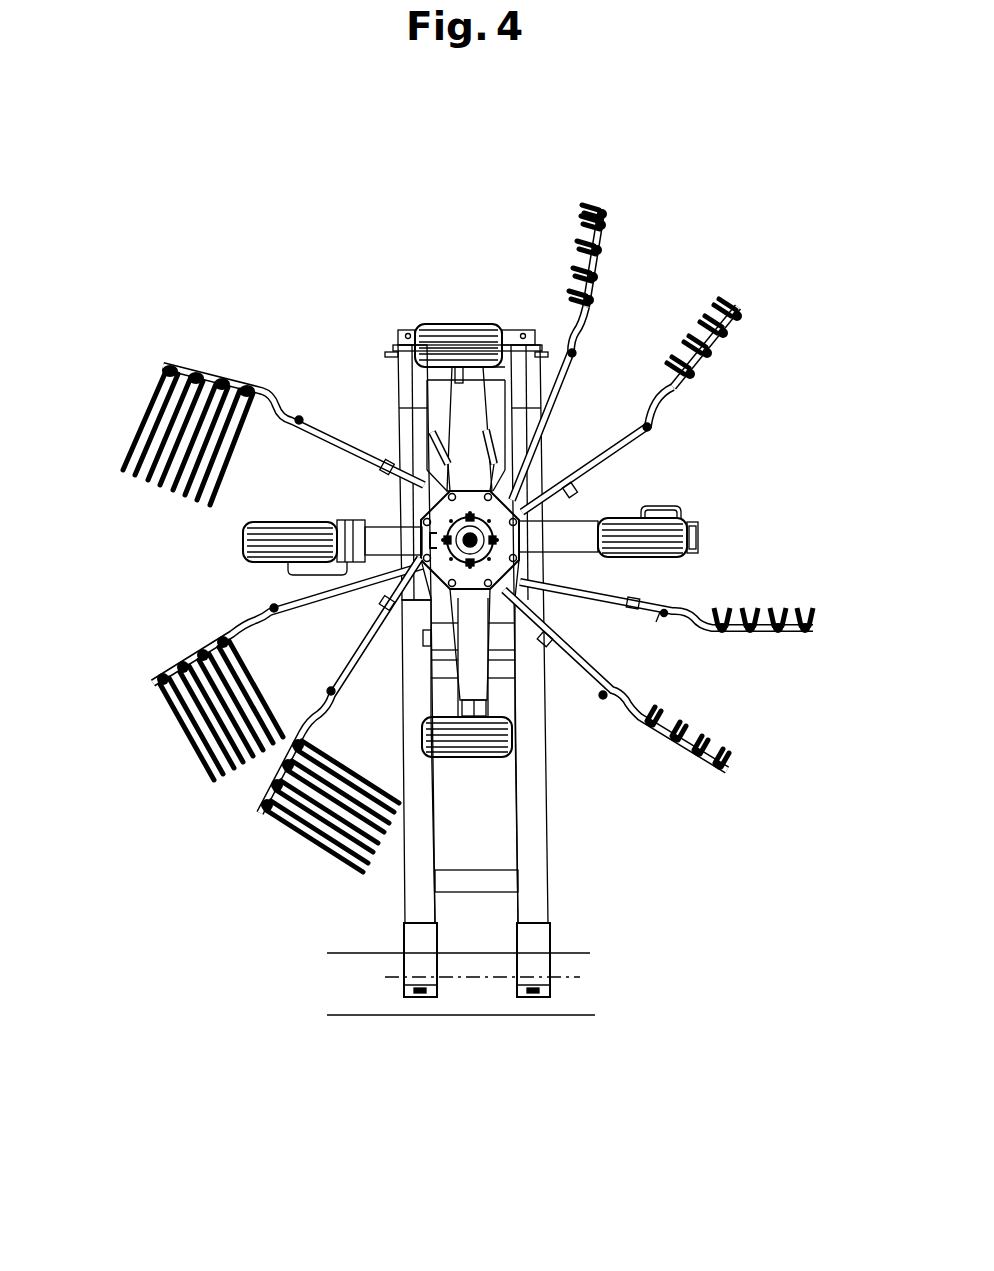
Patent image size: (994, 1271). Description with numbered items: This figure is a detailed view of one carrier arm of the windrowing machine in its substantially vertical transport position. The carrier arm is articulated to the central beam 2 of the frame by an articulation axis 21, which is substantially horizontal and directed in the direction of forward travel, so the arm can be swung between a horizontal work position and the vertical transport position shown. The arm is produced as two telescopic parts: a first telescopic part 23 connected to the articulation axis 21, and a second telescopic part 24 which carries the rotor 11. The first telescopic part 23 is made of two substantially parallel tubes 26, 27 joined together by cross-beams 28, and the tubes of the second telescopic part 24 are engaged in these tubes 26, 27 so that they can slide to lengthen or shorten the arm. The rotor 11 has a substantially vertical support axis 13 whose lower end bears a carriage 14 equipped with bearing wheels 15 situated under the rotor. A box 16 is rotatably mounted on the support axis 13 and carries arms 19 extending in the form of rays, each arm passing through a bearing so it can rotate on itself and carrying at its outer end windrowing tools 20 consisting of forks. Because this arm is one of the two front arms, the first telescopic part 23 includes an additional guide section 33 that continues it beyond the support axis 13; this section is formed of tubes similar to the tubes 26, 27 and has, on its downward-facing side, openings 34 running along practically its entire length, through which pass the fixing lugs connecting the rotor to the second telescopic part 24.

The central beam 2 is at (438, 1017).
The rotor 11 is at (247, 384).
The support axis 13 is at (666, 644).
The carriage 14 is at (662, 468).
The bearing wheels 15 is at (701, 503).
The box 16 is at (340, 715).
The arms 19 is at (259, 672).
The windrowing tools 20 is at (156, 444).
The articulation axes 21 is at (523, 985).
The first telescopic part 23 is at (586, 820).
The second telescopic part 24 is at (451, 282).
The tube 26 is at (626, 634).
The tube 27 is at (339, 761).
The cross-beams 28 is at (590, 937).
The additional guide section 33 is at (285, 417).
The openings 34 is at (504, 296).